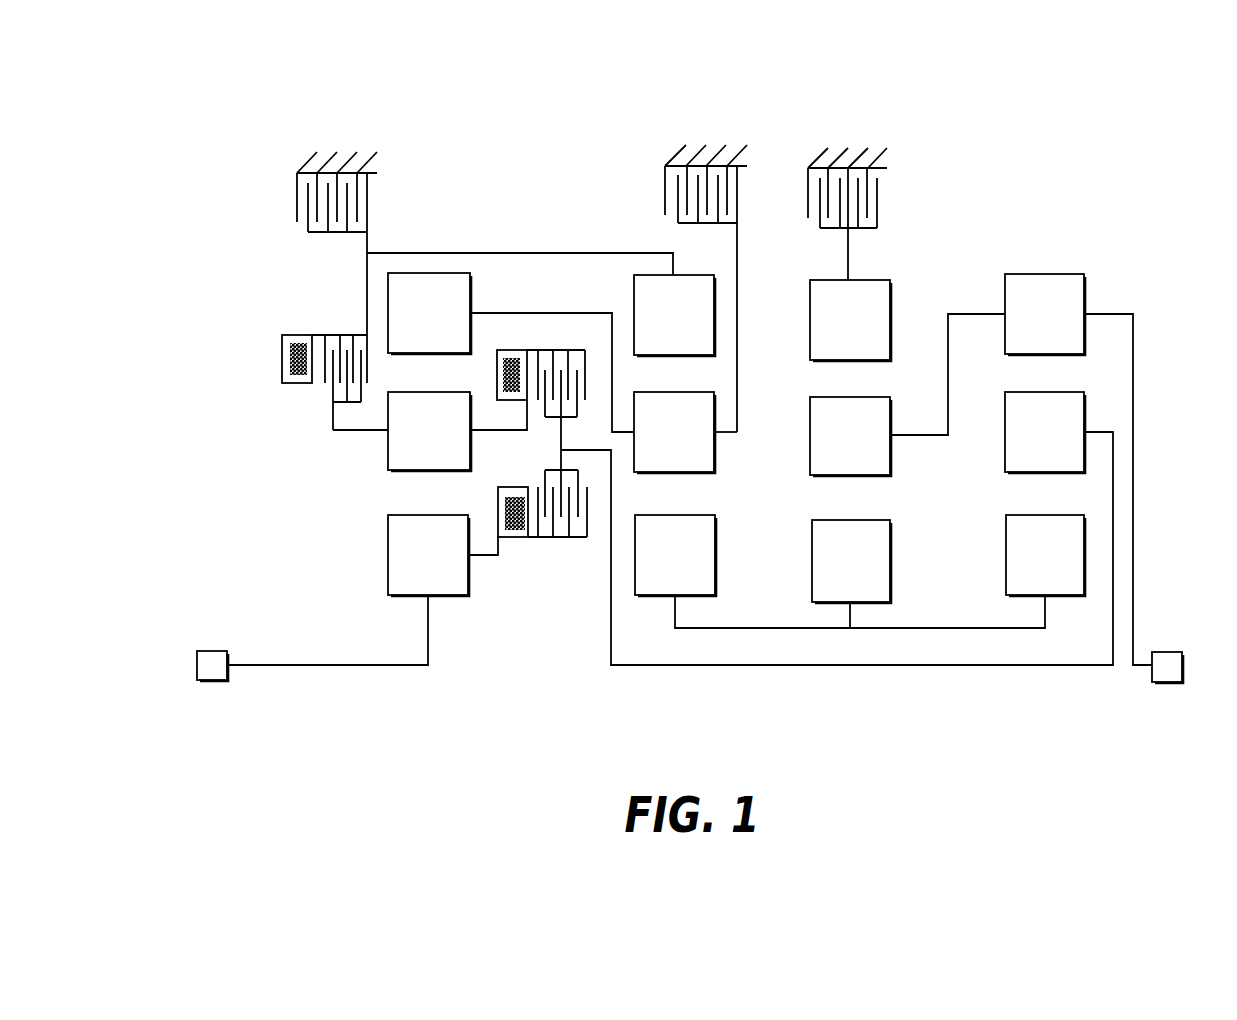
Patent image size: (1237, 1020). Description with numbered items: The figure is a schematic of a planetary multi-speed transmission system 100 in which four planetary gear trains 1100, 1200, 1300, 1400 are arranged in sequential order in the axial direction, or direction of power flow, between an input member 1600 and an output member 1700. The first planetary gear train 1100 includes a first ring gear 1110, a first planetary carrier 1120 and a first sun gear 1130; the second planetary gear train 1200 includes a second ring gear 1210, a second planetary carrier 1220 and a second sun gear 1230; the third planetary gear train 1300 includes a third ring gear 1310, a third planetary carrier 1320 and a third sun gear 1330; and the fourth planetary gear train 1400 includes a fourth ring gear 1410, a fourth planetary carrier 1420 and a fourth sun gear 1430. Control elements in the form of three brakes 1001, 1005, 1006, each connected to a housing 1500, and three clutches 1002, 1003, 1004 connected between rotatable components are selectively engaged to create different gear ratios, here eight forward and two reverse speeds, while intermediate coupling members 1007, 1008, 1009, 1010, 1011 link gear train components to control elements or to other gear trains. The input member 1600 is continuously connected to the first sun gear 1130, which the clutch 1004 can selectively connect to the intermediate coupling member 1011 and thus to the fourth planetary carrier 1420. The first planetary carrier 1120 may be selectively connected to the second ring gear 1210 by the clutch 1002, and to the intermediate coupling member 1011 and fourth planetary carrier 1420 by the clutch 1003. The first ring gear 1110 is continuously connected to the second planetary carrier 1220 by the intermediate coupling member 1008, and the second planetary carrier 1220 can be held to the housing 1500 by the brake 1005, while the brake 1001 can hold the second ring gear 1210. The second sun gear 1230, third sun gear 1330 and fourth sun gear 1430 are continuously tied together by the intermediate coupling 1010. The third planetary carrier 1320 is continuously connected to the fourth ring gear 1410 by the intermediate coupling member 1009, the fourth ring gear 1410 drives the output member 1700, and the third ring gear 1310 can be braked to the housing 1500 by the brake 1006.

The planetary multi-speed transmission system 100 is at (1070, 137).
The brake 1001 is at (295, 198).
The clutch 1002 is at (300, 335).
The clutch 1003 is at (517, 349).
The clutch 1004 is at (533, 538).
The brake 1005 is at (665, 183).
The brake 1006 is at (880, 193).
The intermediate coupling member 1007 is at (490, 253).
The intermediate coupling member 1008 is at (523, 313).
The intermediate coupling member 1009 is at (925, 437).
The intermediate coupling member 1010 is at (948, 628).
The intermediate coupling member 1011 is at (962, 668).
The first planetary gear train 1100 is at (430, 247).
The first ring gear 1110 is at (412, 326).
The first planetary carrier 1120 is at (412, 444).
The first sun gear 1130 is at (411, 568).
The second planetary gear train 1200 is at (632, 247).
The second ring gear 1210 is at (657, 328).
The second planetary carrier 1220 is at (657, 444).
The second sun gear 1230 is at (658, 568).
The third planetary gear train 1300 is at (880, 272).
The third ring gear 1310 is at (833, 332).
The third planetary carrier 1320 is at (833, 448).
The third sun gear 1330 is at (834, 574).
The fourth planetary gear train 1400 is at (1040, 257).
The fourth ring gear 1410 is at (1027, 326).
The fourth planetary carrier 1420 is at (1027, 444).
The fourth sun gear 1430 is at (1028, 568).
The housing 1500 is at (352, 158).
The input member 1600 is at (217, 650).
The output member 1700 is at (1183, 671).